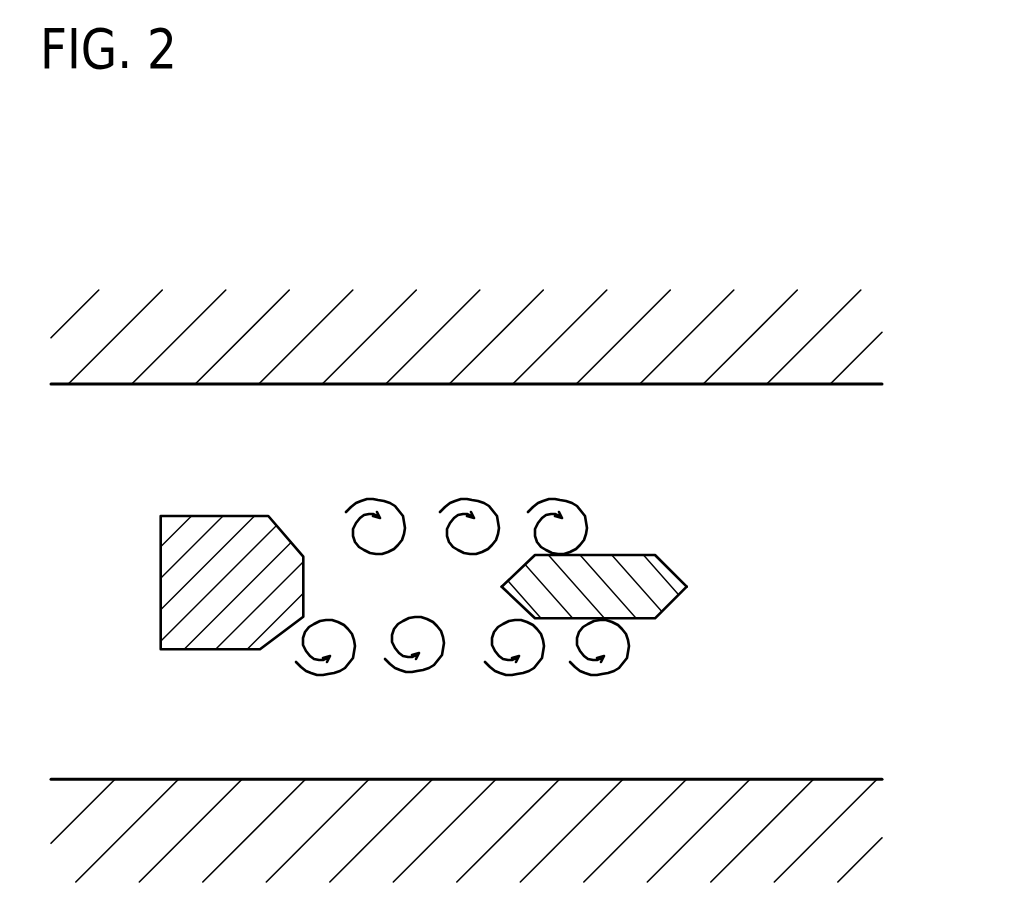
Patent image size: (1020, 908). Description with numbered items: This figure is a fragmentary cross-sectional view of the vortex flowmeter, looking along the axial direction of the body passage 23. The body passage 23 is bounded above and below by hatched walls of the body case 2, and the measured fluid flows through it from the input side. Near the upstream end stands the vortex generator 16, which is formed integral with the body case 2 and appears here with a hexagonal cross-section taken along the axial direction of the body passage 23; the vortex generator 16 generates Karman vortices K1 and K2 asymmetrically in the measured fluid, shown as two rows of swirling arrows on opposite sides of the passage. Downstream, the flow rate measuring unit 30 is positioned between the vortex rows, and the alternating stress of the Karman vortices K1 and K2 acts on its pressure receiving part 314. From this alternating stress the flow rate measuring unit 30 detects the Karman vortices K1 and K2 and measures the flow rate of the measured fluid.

The body case 2 is at (466, 546).
The body passage 23 is at (300, 408).
The vortex generator 16 is at (218, 543).
The flow rate measuring unit 30 is at (633, 602).
The pressure receiving part 314 is at (640, 605).
The Karman vortex K1 is at (382, 498).
The Karman vortex K2 is at (327, 678).